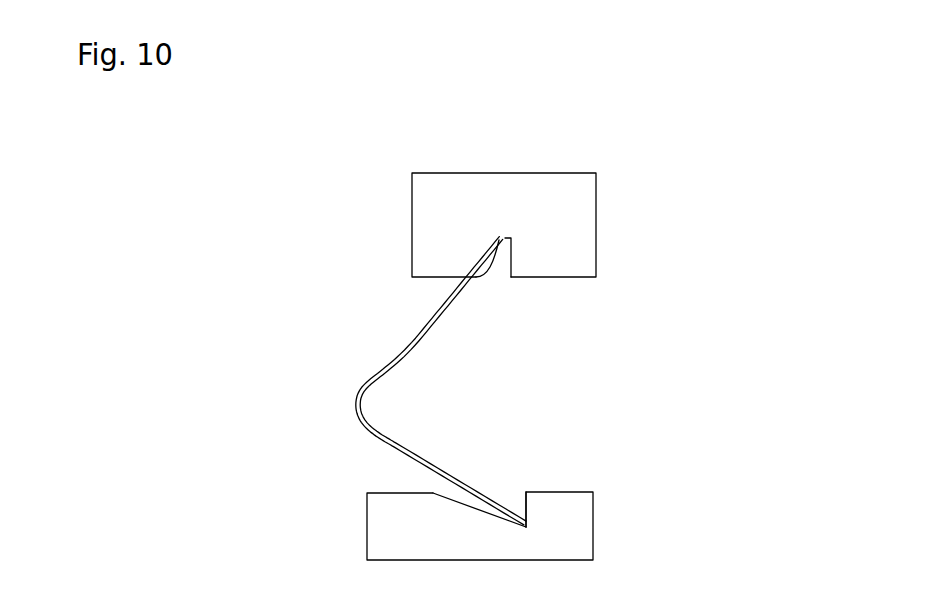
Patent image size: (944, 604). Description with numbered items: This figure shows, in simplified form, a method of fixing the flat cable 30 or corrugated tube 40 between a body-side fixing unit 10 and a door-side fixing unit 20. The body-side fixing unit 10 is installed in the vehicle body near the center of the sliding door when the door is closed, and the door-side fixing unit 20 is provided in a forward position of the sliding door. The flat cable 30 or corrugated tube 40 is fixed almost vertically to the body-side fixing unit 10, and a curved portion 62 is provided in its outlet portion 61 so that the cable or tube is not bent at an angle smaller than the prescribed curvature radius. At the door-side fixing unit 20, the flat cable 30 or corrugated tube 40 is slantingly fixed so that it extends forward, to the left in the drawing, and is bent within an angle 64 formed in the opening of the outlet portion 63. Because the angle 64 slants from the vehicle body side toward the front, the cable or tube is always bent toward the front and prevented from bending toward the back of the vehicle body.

The body-side fixing unit 10 is at (596, 218).
The door-side fixing unit 20 is at (593, 528).
The flat cable 30 is at (346, 381).
The corrugated tube 40 is at (370, 380).
The outlet portion 61 is at (503, 277).
The curved portion 62 is at (483, 268).
The outlet portion 63 is at (518, 492).
The angle 64 is at (510, 500).